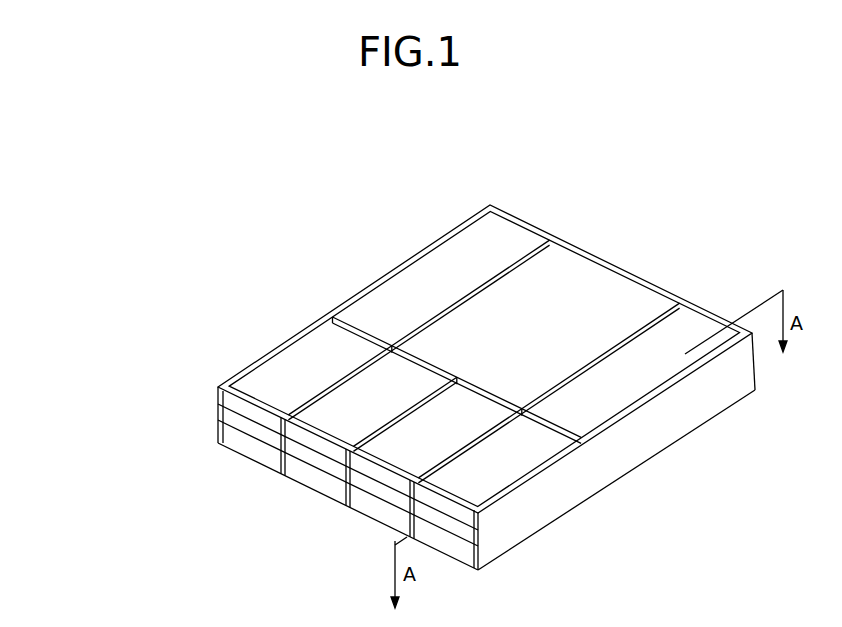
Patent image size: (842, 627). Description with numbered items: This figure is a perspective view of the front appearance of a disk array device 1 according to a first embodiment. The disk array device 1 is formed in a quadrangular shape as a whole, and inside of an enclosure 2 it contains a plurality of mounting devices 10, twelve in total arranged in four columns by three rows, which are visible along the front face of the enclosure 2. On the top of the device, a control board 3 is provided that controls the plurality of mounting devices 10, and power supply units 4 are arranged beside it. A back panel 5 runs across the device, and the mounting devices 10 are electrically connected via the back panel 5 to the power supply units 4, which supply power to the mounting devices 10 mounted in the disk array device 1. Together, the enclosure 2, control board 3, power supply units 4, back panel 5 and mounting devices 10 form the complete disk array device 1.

The disk array device 1 is at (479, 193).
The enclosure 2 is at (660, 434).
The control board 3 is at (613, 295).
The power supply unit 4 is at (493, 240).
The back panel 5 is at (474, 381).
The mounting device 10 is at (530, 573).